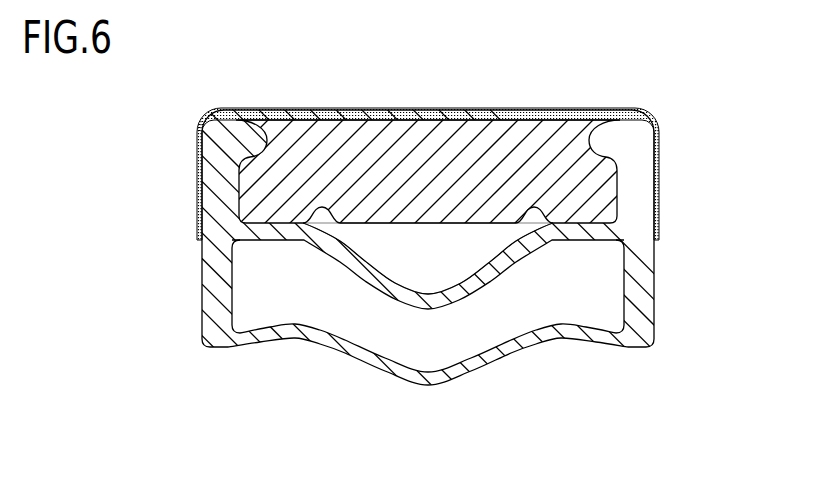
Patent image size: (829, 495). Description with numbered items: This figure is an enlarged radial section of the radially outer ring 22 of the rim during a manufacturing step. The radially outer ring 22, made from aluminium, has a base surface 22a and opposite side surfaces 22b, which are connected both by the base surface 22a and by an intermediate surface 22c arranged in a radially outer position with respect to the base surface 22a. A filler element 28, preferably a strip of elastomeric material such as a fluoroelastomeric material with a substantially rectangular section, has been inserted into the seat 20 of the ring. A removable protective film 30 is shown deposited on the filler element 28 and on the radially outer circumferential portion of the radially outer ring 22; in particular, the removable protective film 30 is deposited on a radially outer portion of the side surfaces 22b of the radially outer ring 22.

The seat 20 is at (458, 261).
The radially outer ring 22 is at (695, 198).
The base surface 22a is at (448, 385).
The side surfaces 22b is at (202, 303).
The intermediate surface 22c is at (372, 288).
The filler element 28 is at (345, 183).
The removable protective film 30 is at (450, 113).